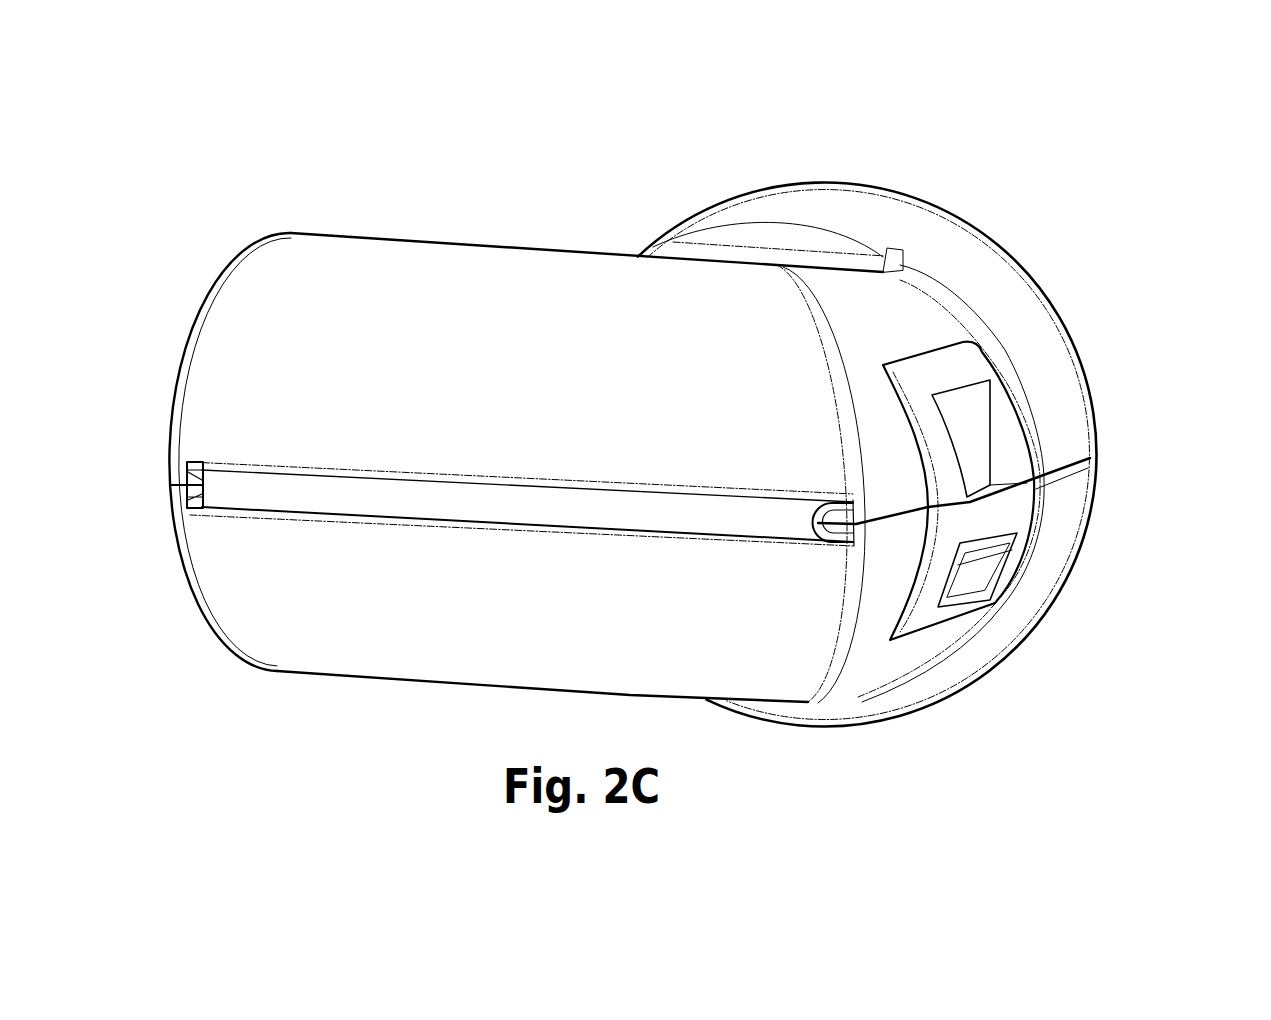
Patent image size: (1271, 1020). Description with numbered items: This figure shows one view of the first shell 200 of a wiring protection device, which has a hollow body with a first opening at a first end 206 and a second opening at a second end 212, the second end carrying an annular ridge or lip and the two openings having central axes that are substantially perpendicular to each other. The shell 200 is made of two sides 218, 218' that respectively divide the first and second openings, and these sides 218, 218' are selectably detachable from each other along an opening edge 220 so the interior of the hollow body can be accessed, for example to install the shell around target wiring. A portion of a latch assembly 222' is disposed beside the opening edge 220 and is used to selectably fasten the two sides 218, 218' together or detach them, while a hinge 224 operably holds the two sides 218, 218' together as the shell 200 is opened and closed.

The first shell 200 is at (652, 398).
The first end 206 is at (482, 461).
The second end 212 is at (940, 455).
The side 218 is at (517, 489).
The side 218' is at (597, 224).
The opening edge 220 is at (180, 483).
The latch assembly portion 222' is at (1001, 453).
The hinge 224 is at (236, 483).